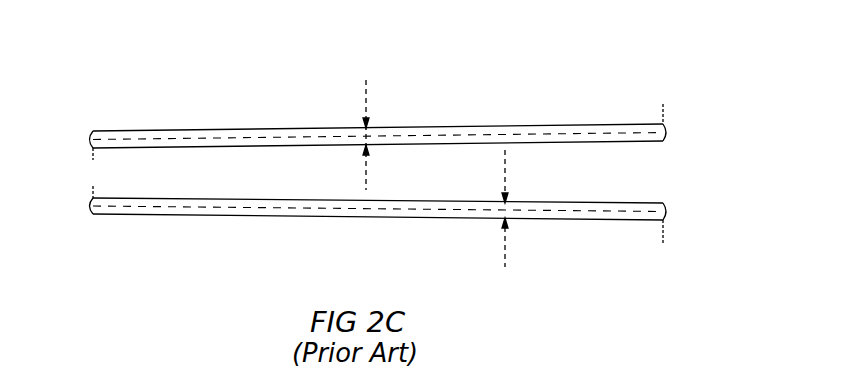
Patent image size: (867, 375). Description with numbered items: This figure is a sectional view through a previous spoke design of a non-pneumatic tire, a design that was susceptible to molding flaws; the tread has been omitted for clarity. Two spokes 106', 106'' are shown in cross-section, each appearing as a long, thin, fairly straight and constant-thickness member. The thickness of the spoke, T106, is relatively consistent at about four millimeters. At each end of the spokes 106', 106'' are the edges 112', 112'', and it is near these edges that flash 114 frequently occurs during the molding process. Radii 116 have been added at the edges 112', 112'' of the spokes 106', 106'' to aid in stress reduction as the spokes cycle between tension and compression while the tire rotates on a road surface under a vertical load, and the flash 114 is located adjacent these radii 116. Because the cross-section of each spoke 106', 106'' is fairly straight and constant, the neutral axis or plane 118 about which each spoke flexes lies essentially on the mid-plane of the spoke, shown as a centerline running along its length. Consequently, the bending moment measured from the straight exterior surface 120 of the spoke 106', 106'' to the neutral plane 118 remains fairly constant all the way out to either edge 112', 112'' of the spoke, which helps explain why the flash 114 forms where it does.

The spoke 106' is at (378, 107).
The spoke 106'' is at (378, 223).
The edge of spoke 112' is at (123, 88).
The edge of spoke 112'' is at (674, 58).
The flash 114 is at (95, 152).
The radii 116 is at (92, 137).
The neutral axis or plane 118 is at (547, 136).
The straight exterior surface of spoke 120 is at (202, 128).
The thickness of spoke T106 is at (530, 270).